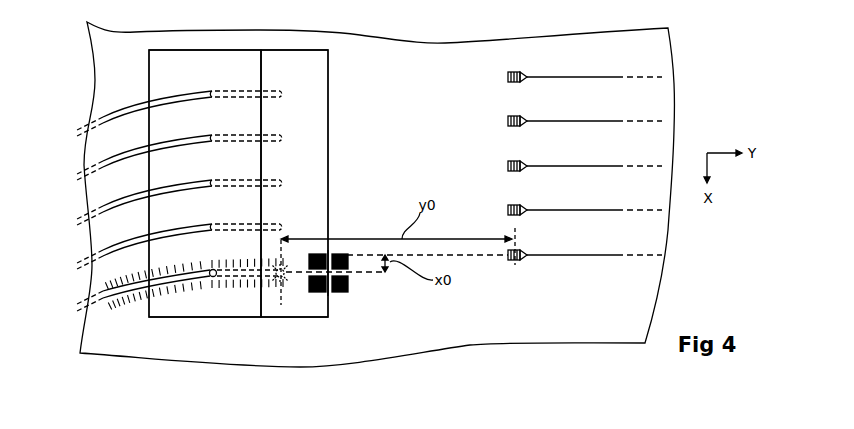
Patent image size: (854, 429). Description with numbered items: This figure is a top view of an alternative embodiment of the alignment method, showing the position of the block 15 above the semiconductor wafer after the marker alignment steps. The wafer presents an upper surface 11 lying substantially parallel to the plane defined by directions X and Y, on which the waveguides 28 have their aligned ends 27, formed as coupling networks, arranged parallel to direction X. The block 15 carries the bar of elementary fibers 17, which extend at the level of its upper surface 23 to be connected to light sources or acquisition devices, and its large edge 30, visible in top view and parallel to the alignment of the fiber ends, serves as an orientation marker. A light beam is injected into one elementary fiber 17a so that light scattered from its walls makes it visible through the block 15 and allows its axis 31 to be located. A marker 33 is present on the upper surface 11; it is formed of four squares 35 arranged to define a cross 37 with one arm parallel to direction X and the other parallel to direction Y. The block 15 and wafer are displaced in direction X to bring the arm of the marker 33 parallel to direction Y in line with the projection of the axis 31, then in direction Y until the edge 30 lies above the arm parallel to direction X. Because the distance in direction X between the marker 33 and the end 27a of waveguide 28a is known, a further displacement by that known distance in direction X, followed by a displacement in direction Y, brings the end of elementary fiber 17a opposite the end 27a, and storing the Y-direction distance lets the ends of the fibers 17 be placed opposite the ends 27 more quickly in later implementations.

The upper surface 11 is at (467, 44).
The block 15 is at (297, 48).
The upper surface 23 is at (202, 57).
The edge 30 is at (329, 118).
The elementary fibers 17 is at (238, 90).
The elementary fiber 17a is at (240, 278).
The ends of waveguides 27 is at (509, 75).
The waveguides 28 is at (547, 77).
The end of waveguide 27a is at (518, 252).
The waveguide 28a is at (563, 255).
The axis 31 is at (370, 275).
The marker 33 is at (327, 310).
The squares 35 is at (378, 339).
The cross 37 is at (327, 255).